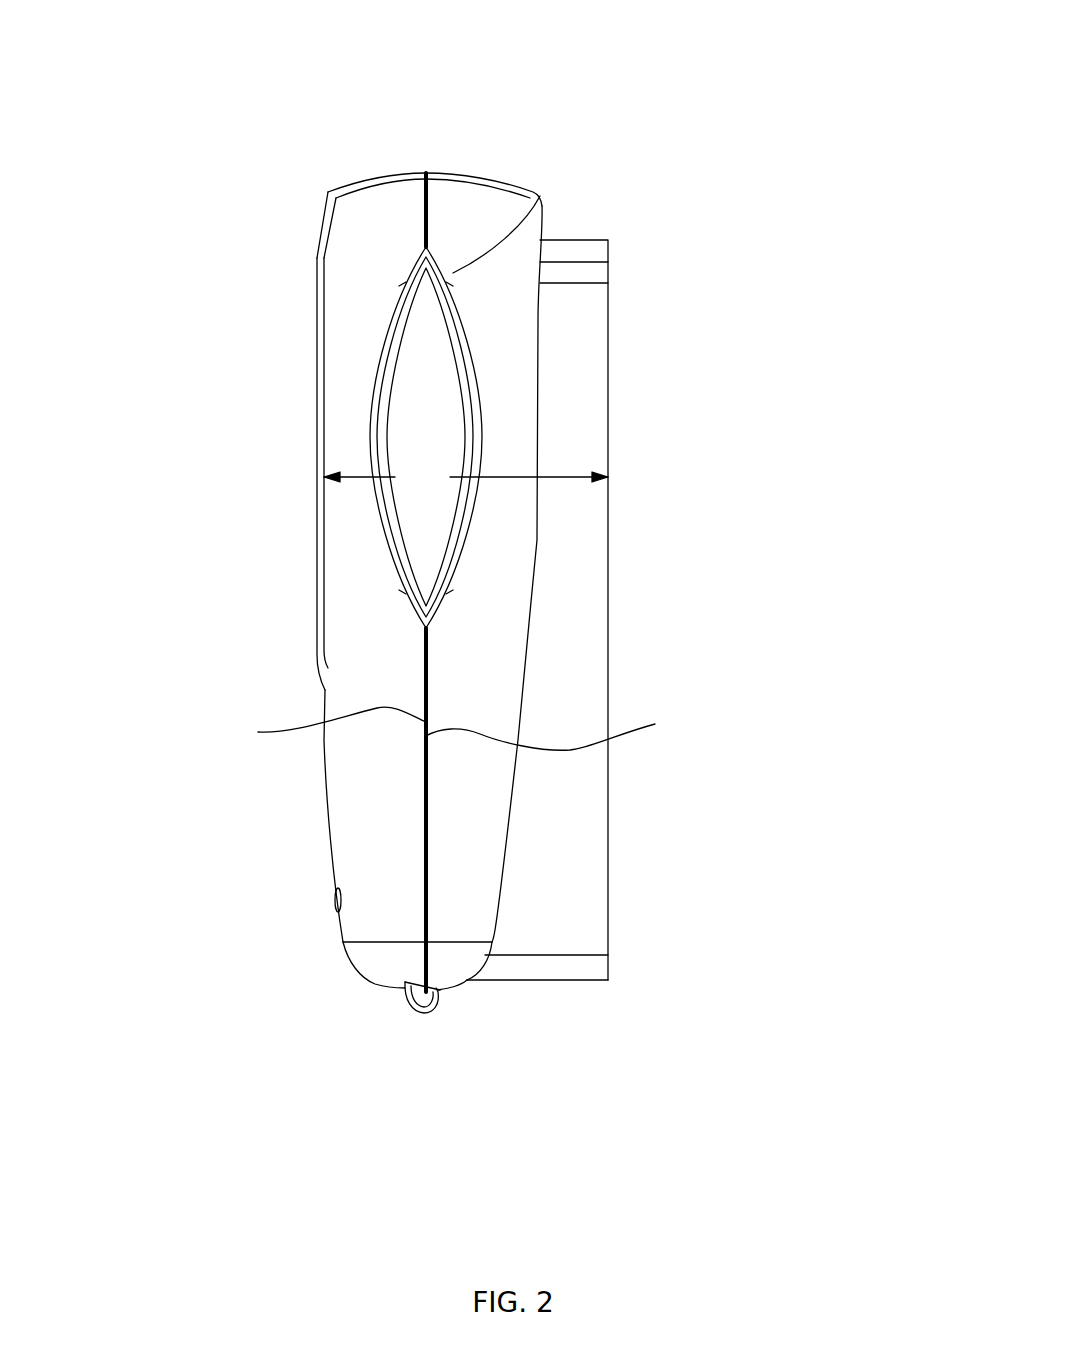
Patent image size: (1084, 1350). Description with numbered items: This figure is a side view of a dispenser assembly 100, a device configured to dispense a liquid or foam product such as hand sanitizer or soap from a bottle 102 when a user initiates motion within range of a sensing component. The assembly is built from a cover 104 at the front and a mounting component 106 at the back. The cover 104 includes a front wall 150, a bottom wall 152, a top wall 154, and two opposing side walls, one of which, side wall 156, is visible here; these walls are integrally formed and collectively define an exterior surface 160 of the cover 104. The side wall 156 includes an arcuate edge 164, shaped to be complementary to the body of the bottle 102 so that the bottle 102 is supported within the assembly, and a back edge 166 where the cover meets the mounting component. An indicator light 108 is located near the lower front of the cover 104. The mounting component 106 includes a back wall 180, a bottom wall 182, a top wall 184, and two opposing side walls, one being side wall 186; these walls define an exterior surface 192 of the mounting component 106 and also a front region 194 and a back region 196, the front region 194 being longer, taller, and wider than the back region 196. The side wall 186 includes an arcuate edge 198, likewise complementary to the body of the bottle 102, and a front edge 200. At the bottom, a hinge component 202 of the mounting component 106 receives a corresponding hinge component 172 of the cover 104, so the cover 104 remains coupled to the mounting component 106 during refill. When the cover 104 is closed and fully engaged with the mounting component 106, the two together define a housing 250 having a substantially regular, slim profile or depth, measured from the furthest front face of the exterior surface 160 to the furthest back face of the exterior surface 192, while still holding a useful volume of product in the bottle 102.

The dispenser assembly 100 is at (711, 72).
The bottle 102 is at (447, 447).
The cover 104 is at (392, 763).
The mounting component 106 is at (503, 210).
The indicator light 108 is at (340, 910).
The front wall 150 is at (370, 640).
The bottom wall 152 is at (375, 983).
The top wall 154 is at (365, 178).
The side wall 156 is at (357, 853).
The exterior surface 160 is at (342, 217).
The arcuate edge 164 is at (377, 550).
The back edge 166 is at (314, 726).
The hinge component 172 is at (410, 1004).
The back wall 180 is at (596, 597).
The bottom wall 182 is at (562, 980).
The top wall 184 is at (565, 240).
The side wall 186 is at (580, 830).
The exterior surface 192 is at (450, 903).
The front region 194 is at (470, 158).
The back region 196 is at (632, 230).
The arcuate edge 198 is at (540, 192).
The front edge 200 is at (566, 727).
The hinge component 202 is at (432, 1010).
The housing 250 is at (598, 392).